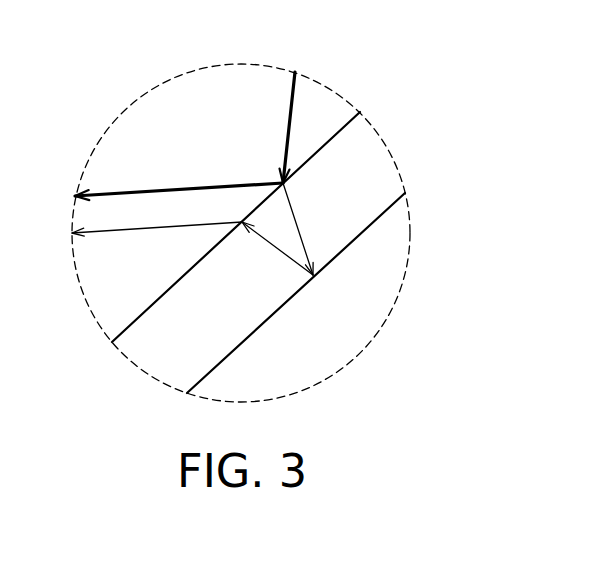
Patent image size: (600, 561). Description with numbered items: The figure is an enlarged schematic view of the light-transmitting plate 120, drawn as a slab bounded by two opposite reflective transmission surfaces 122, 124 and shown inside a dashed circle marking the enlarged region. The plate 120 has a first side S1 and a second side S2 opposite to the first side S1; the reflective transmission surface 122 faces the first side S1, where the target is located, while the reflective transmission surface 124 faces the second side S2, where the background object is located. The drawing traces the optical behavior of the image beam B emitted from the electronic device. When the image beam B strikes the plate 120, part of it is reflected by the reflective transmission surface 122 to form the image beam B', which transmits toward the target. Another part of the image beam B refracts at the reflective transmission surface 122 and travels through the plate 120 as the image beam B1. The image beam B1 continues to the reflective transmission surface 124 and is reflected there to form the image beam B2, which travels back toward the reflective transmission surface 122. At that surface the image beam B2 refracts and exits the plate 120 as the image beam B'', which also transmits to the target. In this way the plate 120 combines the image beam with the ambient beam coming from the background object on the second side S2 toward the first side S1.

The light-transmitting plate 120 is at (301, 216).
The reflective transmission surface 122 is at (339, 132).
The reflective transmission surface 124 is at (377, 222).
The image beam B is at (271, 127).
The image beam B' is at (179, 174).
The image beam B'' is at (157, 244).
The image beam B1 is at (302, 235).
The image beam B2 is at (272, 245).
The first side S1 is at (372, 283).
The second side S2 is at (118, 295).